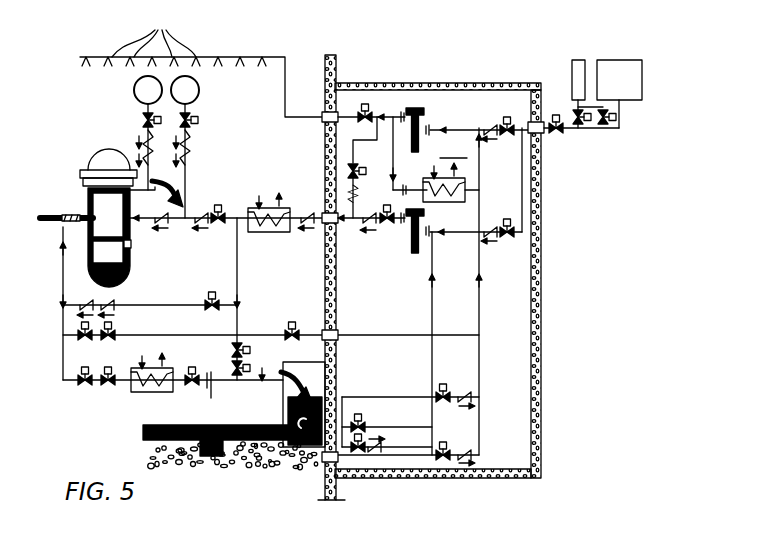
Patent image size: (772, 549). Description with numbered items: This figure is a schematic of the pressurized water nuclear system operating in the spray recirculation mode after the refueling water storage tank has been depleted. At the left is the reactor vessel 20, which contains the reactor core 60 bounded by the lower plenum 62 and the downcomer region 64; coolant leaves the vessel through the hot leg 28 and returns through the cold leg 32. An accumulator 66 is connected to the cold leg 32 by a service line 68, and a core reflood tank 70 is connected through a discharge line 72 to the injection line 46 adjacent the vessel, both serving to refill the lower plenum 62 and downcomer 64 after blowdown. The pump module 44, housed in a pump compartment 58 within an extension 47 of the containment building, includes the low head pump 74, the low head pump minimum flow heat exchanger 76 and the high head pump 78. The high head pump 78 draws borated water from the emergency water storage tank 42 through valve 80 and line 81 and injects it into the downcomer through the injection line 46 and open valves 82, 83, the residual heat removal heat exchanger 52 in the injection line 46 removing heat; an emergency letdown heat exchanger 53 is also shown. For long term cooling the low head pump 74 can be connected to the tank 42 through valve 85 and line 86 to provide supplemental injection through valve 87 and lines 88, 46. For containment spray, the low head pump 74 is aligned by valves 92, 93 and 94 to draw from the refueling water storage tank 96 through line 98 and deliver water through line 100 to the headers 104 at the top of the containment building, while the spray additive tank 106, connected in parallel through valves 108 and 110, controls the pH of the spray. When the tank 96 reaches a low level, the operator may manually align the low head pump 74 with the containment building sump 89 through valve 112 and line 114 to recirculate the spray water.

The reactor vessel 20 is at (105, 163).
The hot leg 28 is at (50, 212).
The cold leg 32 is at (157, 181).
The emergency water storage tank 42 is at (290, 420).
The pump module 44 is at (455, 147).
The injection line 46 is at (320, 218).
The extension of containment building 47 is at (470, 83).
The residual heat removal heat exchanger 52 is at (276, 233).
The emergency letdown heat exchanger 53 is at (156, 390).
The pump compartment 58 is at (518, 262).
The reactor core 60 is at (90, 226).
The lower plenum 62 is at (122, 278).
The downcomer region 64 is at (131, 246).
The accumulator 66 is at (135, 92).
The service line 68 is at (140, 146).
The core reflood tank 70 is at (199, 90).
The discharge line 72 is at (190, 162).
The low head pump 74 is at (422, 122).
The low head pump minimum flow heat exchanger 76 is at (468, 186).
The high head pump 78 is at (428, 230).
The valve 80 is at (343, 450).
The line 81 is at (434, 317).
The valve 82 is at (382, 228).
The valve 83 is at (218, 225).
The valve 85 is at (444, 392).
The line 86 is at (481, 348).
The valve 87 is at (346, 172).
The line 88 is at (375, 140).
The containment building sump 89 is at (212, 468).
The valve 92 is at (557, 135).
The valve 93 is at (506, 117).
The valve 94 is at (367, 105).
The refueling water storage tank 96 is at (634, 70).
The line 98 is at (614, 132).
The line 100 is at (318, 62).
The headers 104 is at (154, 30).
The spray additive tank 106 is at (576, 70).
The valve 108 is at (574, 118).
The valve 110 is at (608, 118).
The valve 112 is at (444, 462).
The line 114 is at (481, 323).